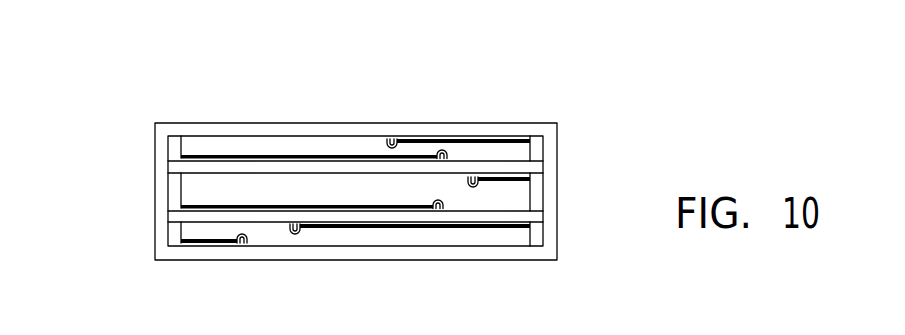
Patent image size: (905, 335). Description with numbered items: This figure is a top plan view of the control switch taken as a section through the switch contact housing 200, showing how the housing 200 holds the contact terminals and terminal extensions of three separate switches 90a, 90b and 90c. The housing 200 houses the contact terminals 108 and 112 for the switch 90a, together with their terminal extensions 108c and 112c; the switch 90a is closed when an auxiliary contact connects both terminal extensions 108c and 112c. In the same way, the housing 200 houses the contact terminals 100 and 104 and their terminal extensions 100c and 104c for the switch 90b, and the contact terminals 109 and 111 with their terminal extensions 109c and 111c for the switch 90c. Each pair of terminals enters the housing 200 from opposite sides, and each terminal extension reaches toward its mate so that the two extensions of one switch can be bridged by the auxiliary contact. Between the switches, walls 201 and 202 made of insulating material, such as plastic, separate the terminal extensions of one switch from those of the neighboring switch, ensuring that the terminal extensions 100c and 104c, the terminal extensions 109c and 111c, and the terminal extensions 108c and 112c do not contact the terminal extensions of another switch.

The contact terminal 100 is at (176, 146).
The terminal extension 100c is at (208, 153).
The contact terminal 104 is at (538, 148).
The terminal extension 104c is at (435, 148).
The contact terminal 108 is at (535, 242).
The terminal extension 108c is at (377, 228).
The contact terminal 109 is at (538, 197).
The terminal extension 109c is at (496, 183).
The contact terminal 111 is at (177, 192).
The terminal extension 111c is at (280, 203).
The contact terminal 112 is at (177, 233).
The terminal extension 112c is at (212, 240).
The switch 90a is at (272, 233).
The switch 90b is at (345, 150).
The switch 90c is at (458, 190).
The switch contact housing 200 is at (432, 255).
The wall 201 is at (532, 168).
The wall 202 is at (528, 215).